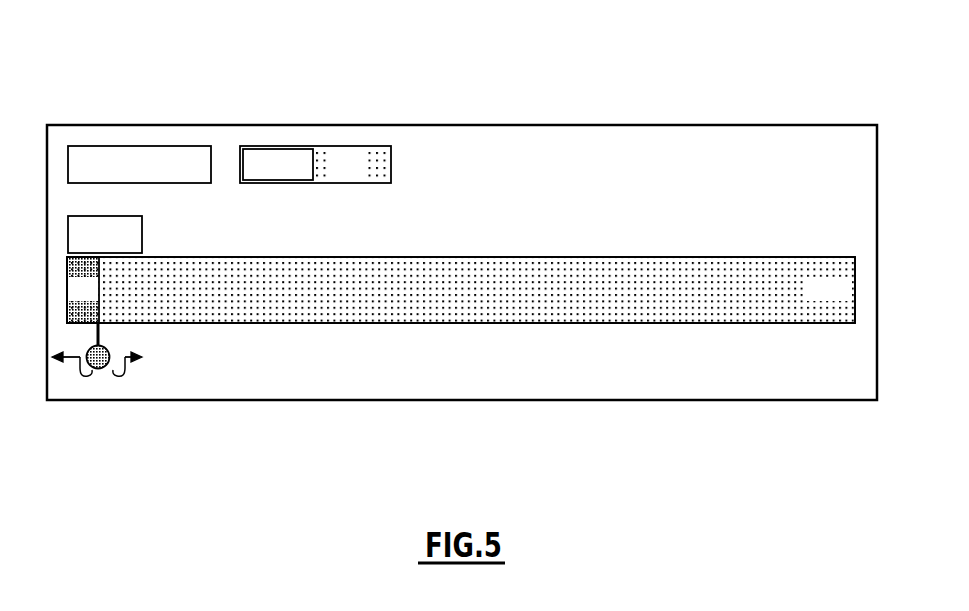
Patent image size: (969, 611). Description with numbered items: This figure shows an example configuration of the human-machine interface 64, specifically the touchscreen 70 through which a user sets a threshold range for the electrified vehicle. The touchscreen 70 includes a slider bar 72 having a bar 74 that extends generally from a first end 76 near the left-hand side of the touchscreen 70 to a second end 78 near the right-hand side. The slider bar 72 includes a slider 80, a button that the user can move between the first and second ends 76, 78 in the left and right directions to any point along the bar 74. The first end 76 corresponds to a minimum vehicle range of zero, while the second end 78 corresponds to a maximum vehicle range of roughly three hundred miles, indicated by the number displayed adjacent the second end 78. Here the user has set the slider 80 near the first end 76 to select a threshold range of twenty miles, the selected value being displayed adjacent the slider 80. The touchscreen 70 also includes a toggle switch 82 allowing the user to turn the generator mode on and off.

The human-machine interface 64 is at (759, 84).
The touchscreen 70 is at (587, 125).
The slider bar 72 is at (520, 250).
The bar 74 is at (400, 257).
The first end 76 is at (67, 283).
The second end 78 is at (855, 285).
The slider 80 is at (106, 350).
The toggle switch 82 is at (329, 138).